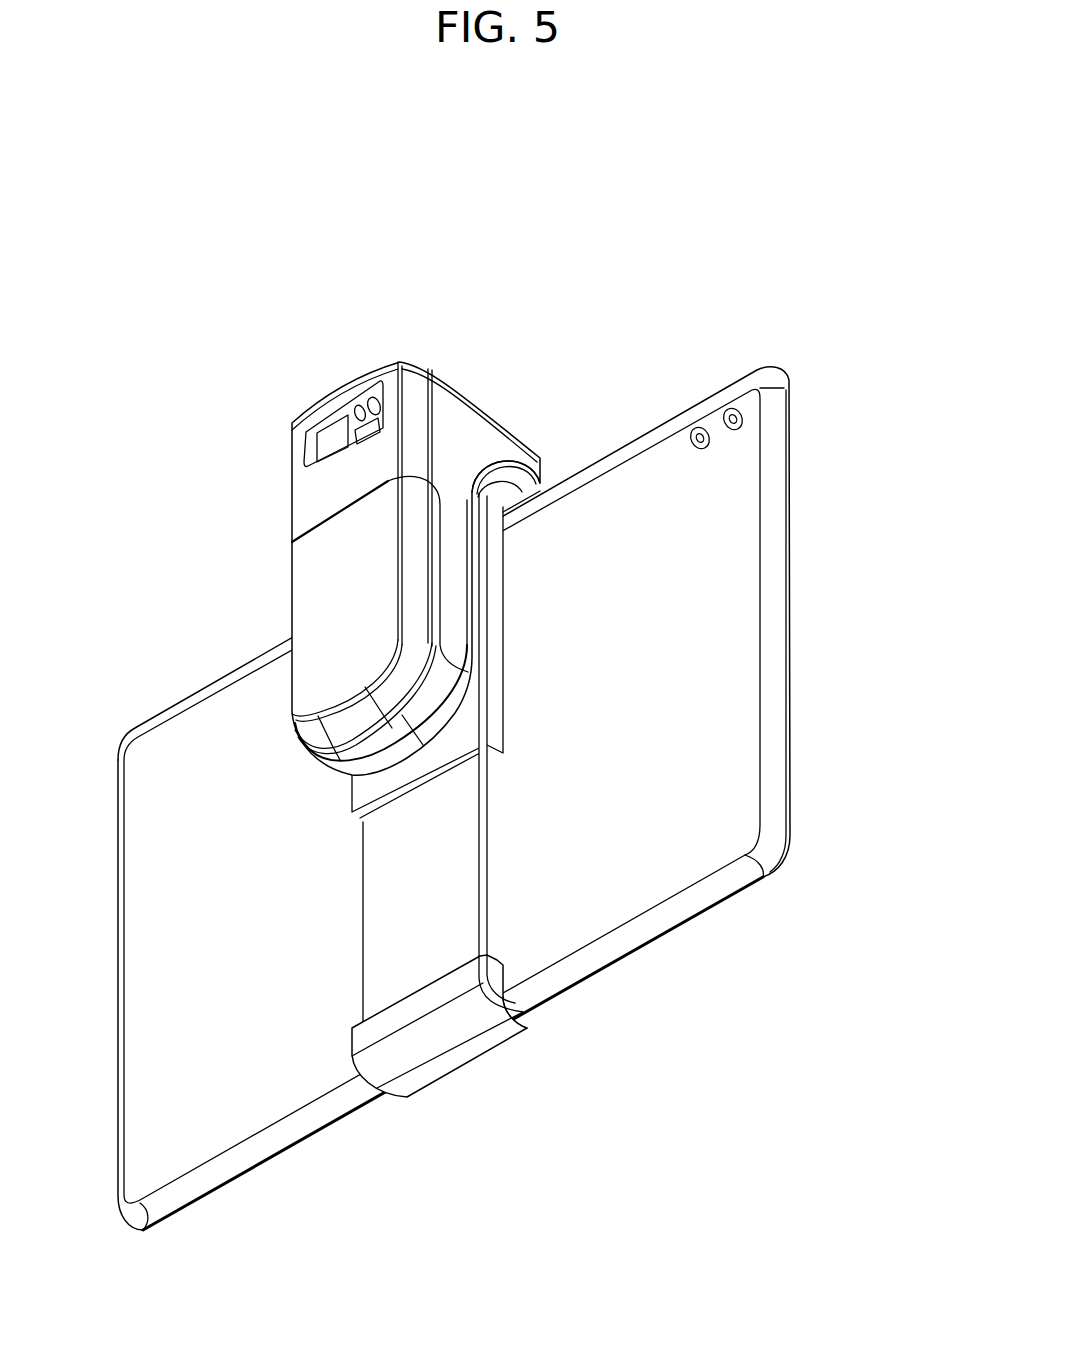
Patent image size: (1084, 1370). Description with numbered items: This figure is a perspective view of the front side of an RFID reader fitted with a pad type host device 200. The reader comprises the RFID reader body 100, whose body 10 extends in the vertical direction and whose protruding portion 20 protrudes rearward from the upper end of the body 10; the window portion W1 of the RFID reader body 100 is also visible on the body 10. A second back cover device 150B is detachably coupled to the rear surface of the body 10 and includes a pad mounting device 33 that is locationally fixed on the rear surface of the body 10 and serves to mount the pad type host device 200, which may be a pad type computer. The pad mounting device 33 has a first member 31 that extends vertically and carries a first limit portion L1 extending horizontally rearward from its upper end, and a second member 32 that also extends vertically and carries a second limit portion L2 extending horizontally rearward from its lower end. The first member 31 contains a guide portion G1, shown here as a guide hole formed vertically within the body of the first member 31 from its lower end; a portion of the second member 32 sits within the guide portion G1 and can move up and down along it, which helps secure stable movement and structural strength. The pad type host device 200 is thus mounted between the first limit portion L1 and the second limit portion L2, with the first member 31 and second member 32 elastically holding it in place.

The RFID reader body 100 is at (330, 774).
The body 10 is at (347, 568).
The window portion W1 is at (300, 443).
The protruding portion 20 is at (505, 442).
The first member 31 is at (527, 483).
The first limit portion L1 is at (520, 508).
The second member 32 is at (406, 935).
The pad mounting device 33 is at (400, 1121).
The second back cover device 150B is at (478, 1112).
The second limit portion L2 is at (500, 1040).
The guide portion G1 is at (412, 805).
The pad type host device 200 is at (824, 585).